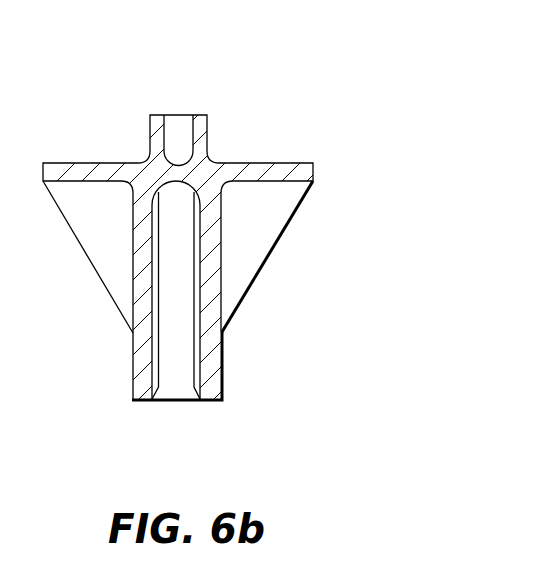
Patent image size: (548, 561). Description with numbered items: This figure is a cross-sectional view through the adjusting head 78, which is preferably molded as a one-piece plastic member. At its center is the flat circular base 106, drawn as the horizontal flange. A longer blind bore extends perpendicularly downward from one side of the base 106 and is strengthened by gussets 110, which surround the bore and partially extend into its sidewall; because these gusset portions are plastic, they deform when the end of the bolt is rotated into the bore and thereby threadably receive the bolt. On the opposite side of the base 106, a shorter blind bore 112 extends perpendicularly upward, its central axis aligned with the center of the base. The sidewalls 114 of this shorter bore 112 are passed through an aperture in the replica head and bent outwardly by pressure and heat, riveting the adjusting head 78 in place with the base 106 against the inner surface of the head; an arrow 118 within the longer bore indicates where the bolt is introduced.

The adjusting head 78 is at (309, 228).
The flat circular base 106 is at (75, 163).
The gussets 110 is at (102, 284).
The shorter blind bore 112 is at (176, 126).
The sidewalls 114 is at (150, 125).
The lower channel flow path 118 is at (178, 374).